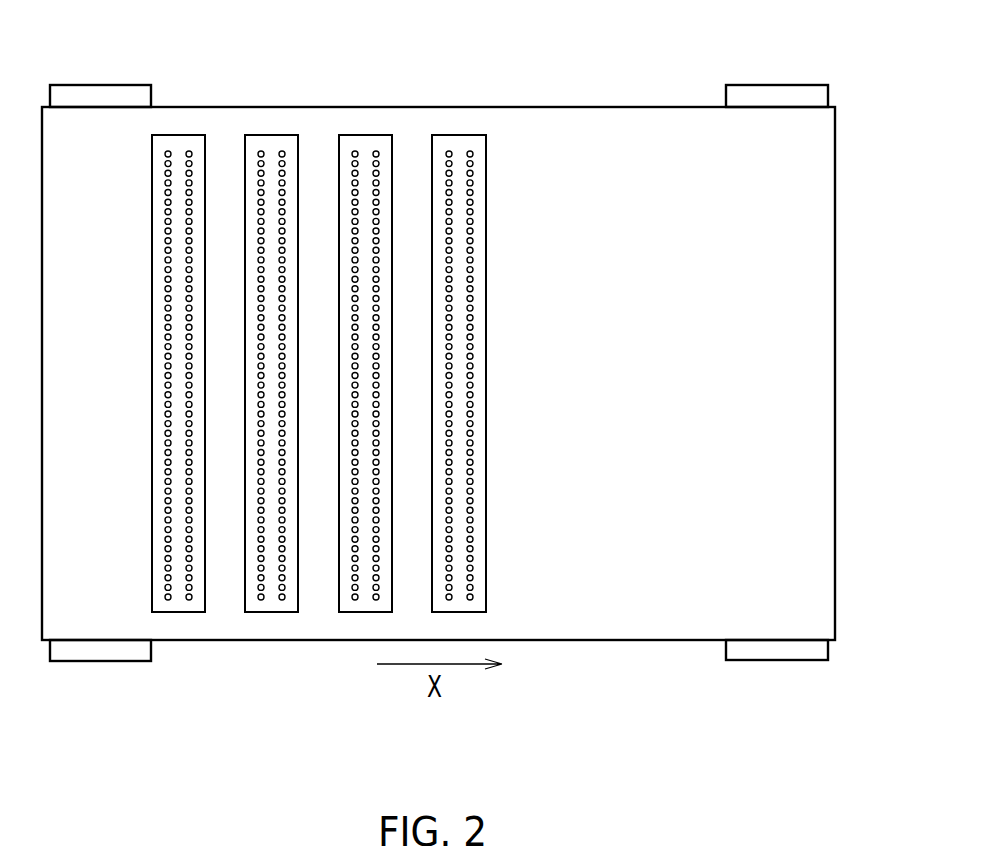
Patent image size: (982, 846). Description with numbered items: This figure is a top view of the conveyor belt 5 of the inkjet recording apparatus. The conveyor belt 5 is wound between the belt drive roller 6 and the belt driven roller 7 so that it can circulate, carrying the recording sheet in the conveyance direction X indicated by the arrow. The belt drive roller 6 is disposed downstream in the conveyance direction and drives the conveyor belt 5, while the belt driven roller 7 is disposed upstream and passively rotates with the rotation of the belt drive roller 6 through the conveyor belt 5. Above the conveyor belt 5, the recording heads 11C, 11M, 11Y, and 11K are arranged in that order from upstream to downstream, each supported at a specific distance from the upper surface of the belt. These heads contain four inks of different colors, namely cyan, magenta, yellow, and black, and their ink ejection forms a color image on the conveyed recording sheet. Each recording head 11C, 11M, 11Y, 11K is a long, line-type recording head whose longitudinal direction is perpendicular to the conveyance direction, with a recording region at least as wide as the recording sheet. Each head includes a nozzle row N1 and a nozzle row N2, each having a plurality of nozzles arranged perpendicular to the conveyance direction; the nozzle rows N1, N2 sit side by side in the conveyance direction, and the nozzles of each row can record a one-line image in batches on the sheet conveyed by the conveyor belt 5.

The conveyor belt 5 is at (812, 585).
The belt drive roller 6 is at (763, 92).
The belt driven roller 7 is at (88, 92).
The recording head 11C is at (182, 370).
The recording head 11M is at (280, 142).
The recording head 11Y is at (374, 142).
The recording head 11K is at (468, 142).
The nozzle row N1 is at (162, 603).
The nozzle row N2 is at (195, 603).